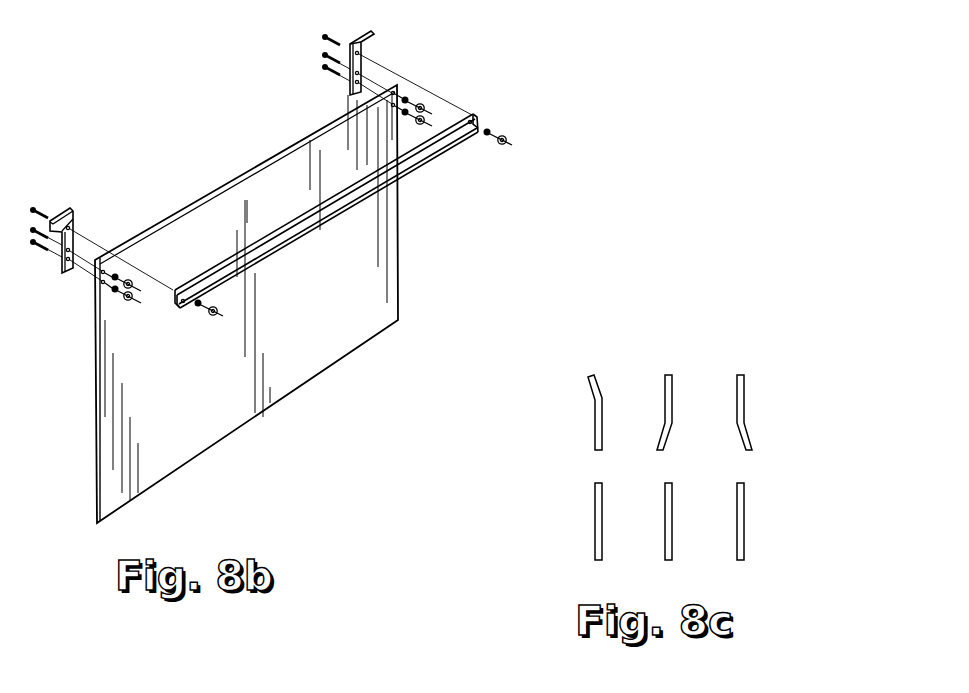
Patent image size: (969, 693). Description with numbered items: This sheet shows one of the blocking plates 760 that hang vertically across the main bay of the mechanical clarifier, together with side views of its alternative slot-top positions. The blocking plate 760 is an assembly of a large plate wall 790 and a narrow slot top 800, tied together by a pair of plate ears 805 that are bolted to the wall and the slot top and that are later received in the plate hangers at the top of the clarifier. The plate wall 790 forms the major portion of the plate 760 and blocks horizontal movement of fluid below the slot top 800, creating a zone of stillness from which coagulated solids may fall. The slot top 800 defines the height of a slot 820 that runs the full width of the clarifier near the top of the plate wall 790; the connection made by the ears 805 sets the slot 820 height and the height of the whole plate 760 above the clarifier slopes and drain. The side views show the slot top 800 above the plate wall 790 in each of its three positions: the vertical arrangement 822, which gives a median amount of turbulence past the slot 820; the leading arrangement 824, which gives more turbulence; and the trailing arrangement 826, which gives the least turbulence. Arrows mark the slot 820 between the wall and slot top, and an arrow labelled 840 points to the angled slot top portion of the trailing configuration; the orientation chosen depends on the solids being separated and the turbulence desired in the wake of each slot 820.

In FIG. 8B, the blocking plate 760 is at (462, 93).
In FIG. 8B, the plate wall 790 is at (321, 306).
In FIG. 8C, the plate wall 790 is at (594, 513).
In FIG. 8B, the slot top 800 is at (408, 163).
In FIG. 8C, the slot top 800 is at (594, 427).
In FIG. 8B, the plate ear 805 is at (78, 221).
In FIG. 8C, the slot 820 is at (645, 469).
In FIG. 8C, the vertical arrangement 822 is at (596, 362).
In FIG. 8C, the leading arrangement 824 is at (668, 362).
In FIG. 8C, the trailing arrangement 826 is at (739, 362).
In FIG. 8C, the bent bar portion 840 is at (757, 418).